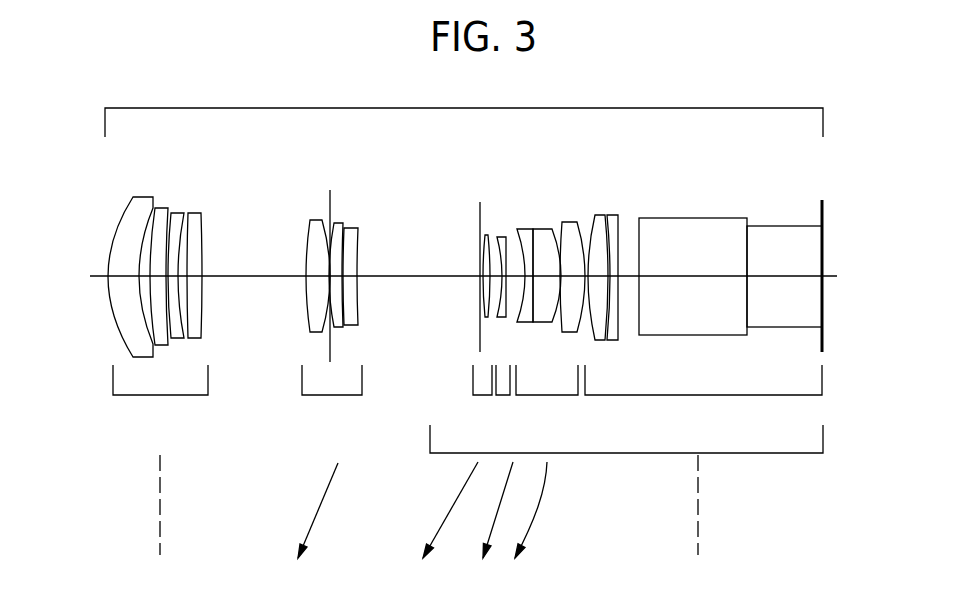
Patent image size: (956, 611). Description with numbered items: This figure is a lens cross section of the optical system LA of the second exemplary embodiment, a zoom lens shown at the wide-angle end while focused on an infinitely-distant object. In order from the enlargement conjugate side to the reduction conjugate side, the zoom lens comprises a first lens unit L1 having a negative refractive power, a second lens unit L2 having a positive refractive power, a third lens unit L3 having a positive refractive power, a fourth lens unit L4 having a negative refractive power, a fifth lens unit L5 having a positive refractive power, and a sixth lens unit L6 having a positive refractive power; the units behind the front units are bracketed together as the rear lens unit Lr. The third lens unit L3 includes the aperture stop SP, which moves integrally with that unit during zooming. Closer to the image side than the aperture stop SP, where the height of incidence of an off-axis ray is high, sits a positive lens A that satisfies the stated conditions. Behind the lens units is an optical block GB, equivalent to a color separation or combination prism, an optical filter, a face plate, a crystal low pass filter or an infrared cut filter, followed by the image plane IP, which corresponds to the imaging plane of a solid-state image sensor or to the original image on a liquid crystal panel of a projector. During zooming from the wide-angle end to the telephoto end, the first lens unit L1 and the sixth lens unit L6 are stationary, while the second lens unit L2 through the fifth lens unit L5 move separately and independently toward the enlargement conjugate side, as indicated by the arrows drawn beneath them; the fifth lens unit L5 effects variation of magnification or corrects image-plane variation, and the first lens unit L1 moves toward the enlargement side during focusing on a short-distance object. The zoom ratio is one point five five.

The optical system LA is at (463, 320).
The first lens unit L1 is at (160, 396).
The second lens unit L2 is at (330, 396).
The third lens unit L3 is at (482, 396).
The fourth lens unit L4 is at (503, 396).
The fifth lens unit L5 is at (547, 396).
The sixth lens unit L6 is at (694, 396).
The rear lens unit Lr is at (623, 357).
The aperture stop SP is at (480, 214).
The positive lens A is at (597, 213).
The optical block GB is at (680, 218).
The image plane IP is at (820, 208).